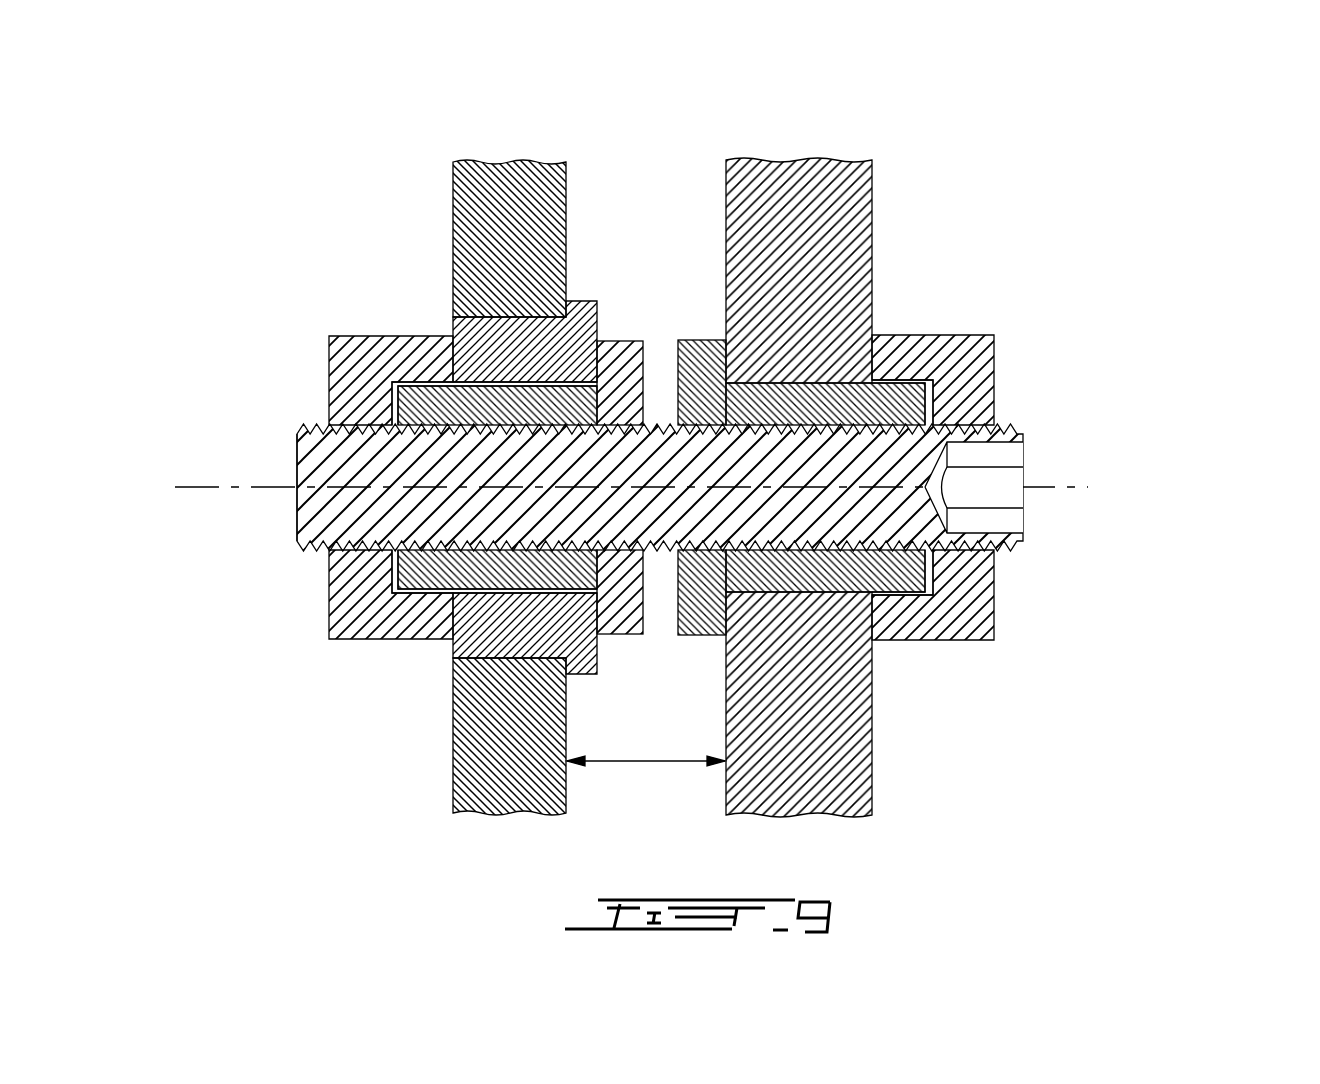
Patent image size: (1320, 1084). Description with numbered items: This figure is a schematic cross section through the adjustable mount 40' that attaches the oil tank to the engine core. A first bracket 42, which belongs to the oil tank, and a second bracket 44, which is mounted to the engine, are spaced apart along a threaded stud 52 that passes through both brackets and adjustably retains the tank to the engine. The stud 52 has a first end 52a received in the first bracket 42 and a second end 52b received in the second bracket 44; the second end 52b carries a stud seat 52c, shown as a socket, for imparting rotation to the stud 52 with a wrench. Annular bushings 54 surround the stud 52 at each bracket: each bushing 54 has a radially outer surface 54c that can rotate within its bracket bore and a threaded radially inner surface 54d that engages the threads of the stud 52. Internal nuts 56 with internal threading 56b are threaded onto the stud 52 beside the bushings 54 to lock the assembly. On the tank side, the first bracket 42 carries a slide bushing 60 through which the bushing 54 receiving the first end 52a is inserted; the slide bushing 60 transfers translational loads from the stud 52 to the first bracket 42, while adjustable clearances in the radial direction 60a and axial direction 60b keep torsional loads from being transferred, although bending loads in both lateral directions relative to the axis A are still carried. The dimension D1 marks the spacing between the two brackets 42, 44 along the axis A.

The adjustable mount 40' is at (701, 453).
The first bracket 42 is at (498, 220).
The second bracket 44 is at (810, 222).
The threaded stud 52 is at (663, 513).
The first end 52a is at (312, 457).
The second end 52b is at (1002, 518).
The stud seat 52c is at (992, 457).
The bushing 54 is at (692, 348).
The radially outer surface 54c is at (813, 379).
The threaded radially inner surface 54d is at (818, 425).
The nut 56 is at (353, 365).
The internal threading 56b is at (975, 545).
The slide bushing 60 is at (452, 645).
The radial clearance 60a is at (462, 594).
The axial clearance 60b is at (448, 357).
The axis A is at (1088, 487).
The gap distance D1 is at (647, 763).